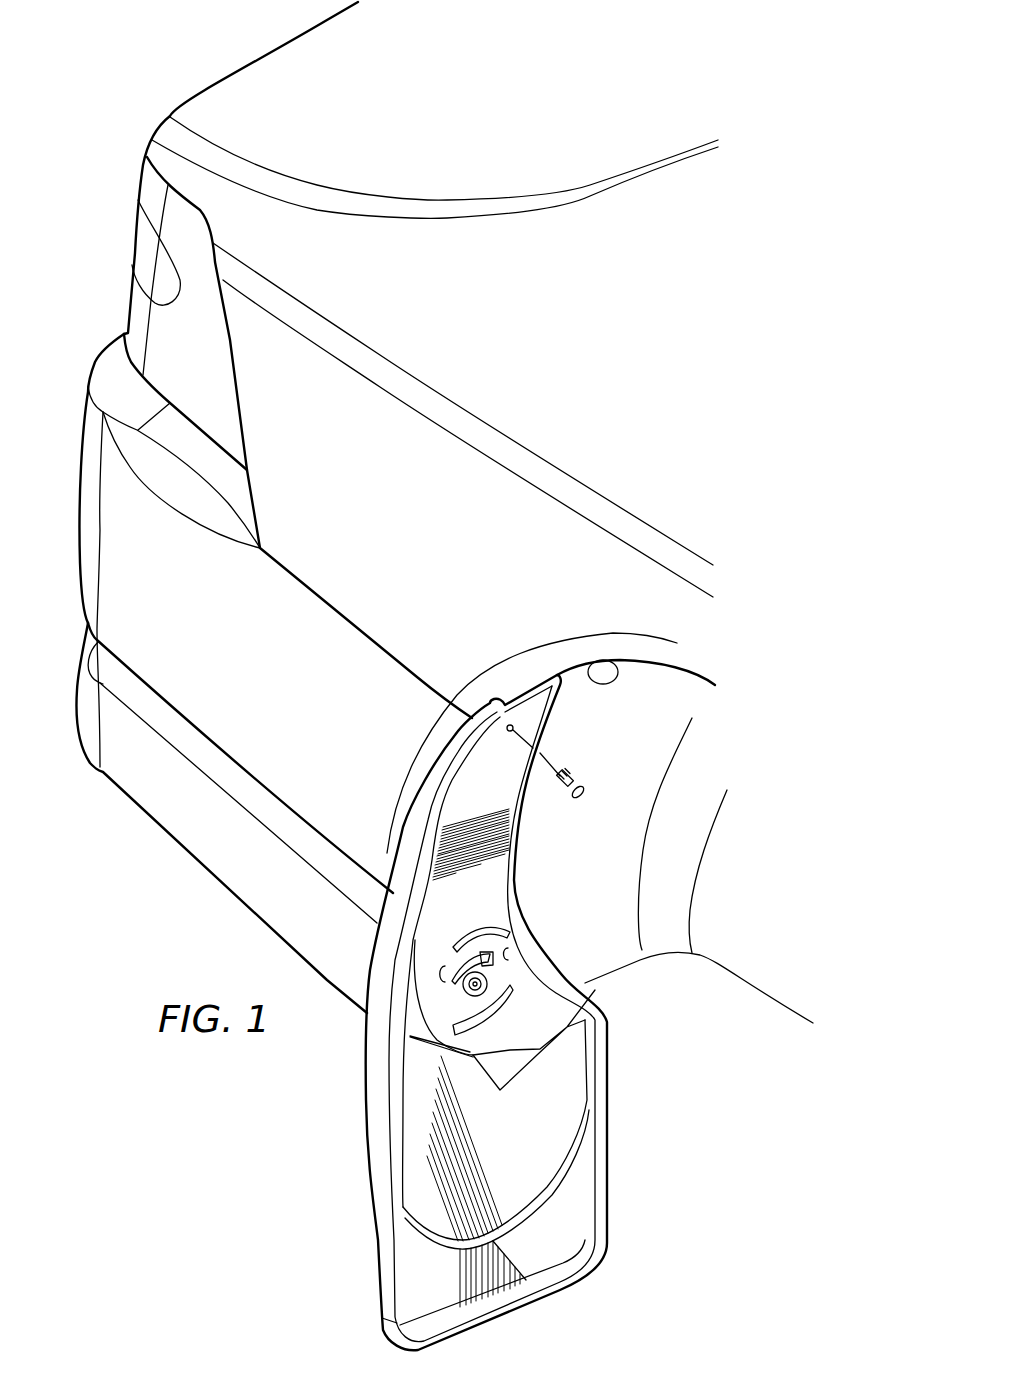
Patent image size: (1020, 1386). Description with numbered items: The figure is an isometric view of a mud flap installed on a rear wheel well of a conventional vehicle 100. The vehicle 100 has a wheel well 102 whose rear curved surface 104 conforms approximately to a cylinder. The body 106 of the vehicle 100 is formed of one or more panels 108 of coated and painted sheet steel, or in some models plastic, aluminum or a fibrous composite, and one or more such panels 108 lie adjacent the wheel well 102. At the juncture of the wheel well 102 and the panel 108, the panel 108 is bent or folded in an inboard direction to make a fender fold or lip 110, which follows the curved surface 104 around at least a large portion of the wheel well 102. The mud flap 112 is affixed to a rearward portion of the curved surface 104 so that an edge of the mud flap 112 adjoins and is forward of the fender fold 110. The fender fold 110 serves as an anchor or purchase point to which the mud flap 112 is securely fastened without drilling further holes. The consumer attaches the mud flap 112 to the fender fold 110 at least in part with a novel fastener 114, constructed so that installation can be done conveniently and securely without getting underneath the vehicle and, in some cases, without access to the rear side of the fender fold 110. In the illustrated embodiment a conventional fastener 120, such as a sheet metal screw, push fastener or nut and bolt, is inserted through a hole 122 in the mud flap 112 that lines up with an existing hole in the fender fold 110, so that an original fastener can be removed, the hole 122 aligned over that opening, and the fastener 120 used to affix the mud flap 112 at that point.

The vehicle 100 is at (480, 323).
The wheel well 102 is at (764, 920).
The rear curved surface 104 is at (609, 848).
The body 106 is at (395, 517).
The panel 108 is at (325, 702).
The fender fold 110 is at (620, 672).
The mud flap 112 is at (539, 1147).
The fastener 114 is at (484, 915).
The conventional fastener 120 is at (588, 787).
The hole 122 is at (513, 726).